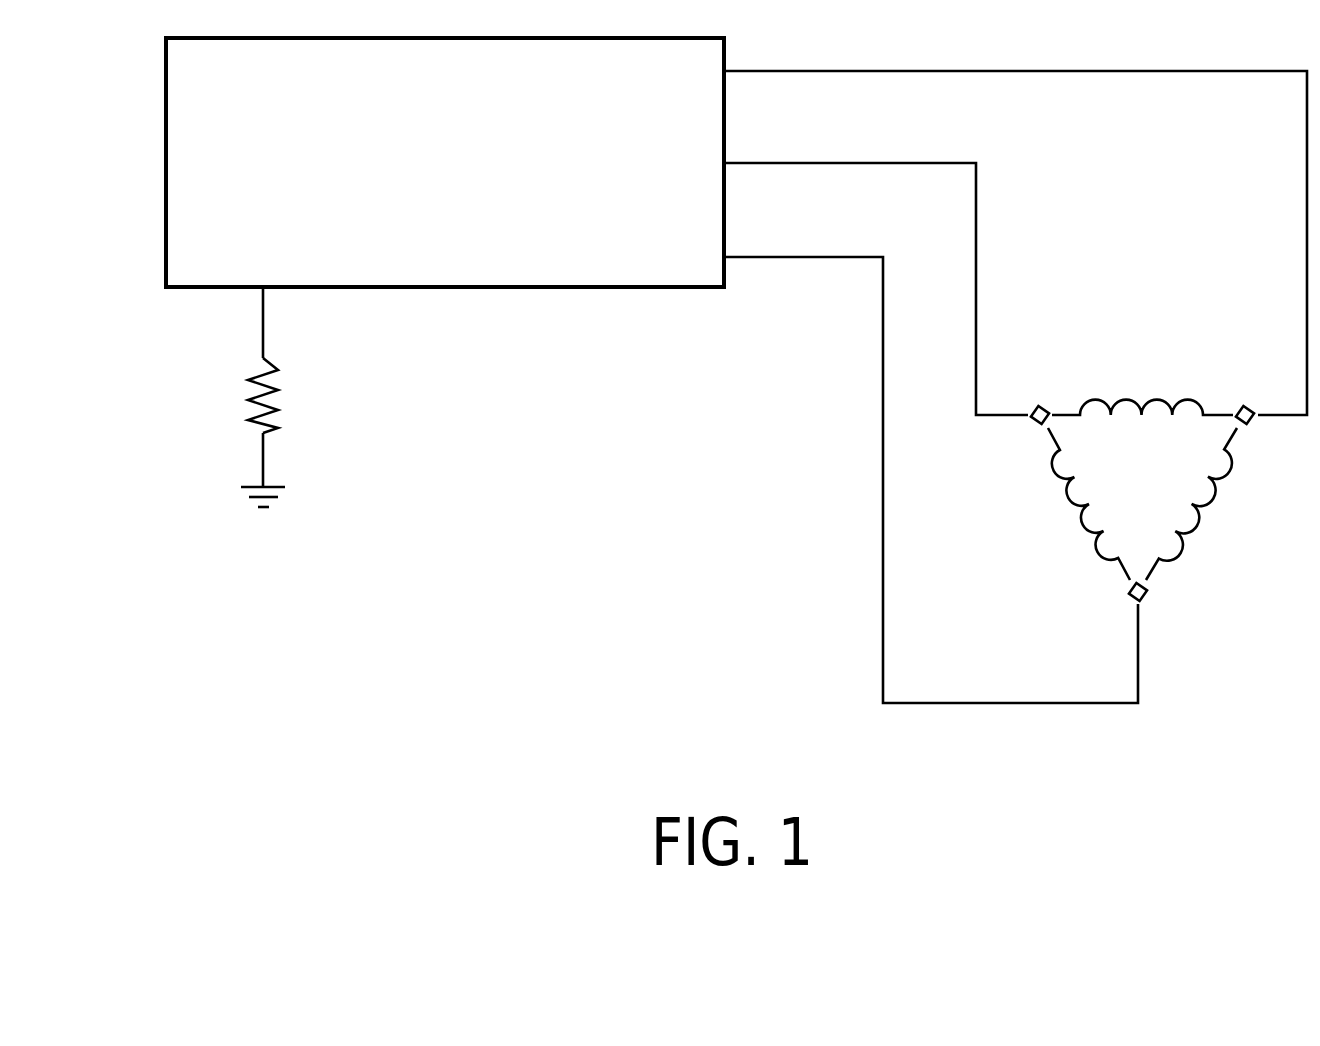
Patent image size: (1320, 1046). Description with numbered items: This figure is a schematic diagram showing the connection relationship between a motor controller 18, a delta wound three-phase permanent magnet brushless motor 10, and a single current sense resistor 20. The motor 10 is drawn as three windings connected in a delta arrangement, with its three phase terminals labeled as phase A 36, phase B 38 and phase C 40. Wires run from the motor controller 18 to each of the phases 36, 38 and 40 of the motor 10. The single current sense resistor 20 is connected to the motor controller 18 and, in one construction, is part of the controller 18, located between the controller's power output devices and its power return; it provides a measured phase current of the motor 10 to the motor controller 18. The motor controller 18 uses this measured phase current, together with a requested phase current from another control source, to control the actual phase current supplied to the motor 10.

The delta wound three-phase permanent magnet brushless motor 10 is at (1125, 492).
The motor controller 18 is at (436, 191).
The single current sense resistor 20 is at (278, 392).
The phase A 36 is at (1046, 405).
The phase B 38 is at (1240, 405).
The phase C 40 is at (1151, 598).